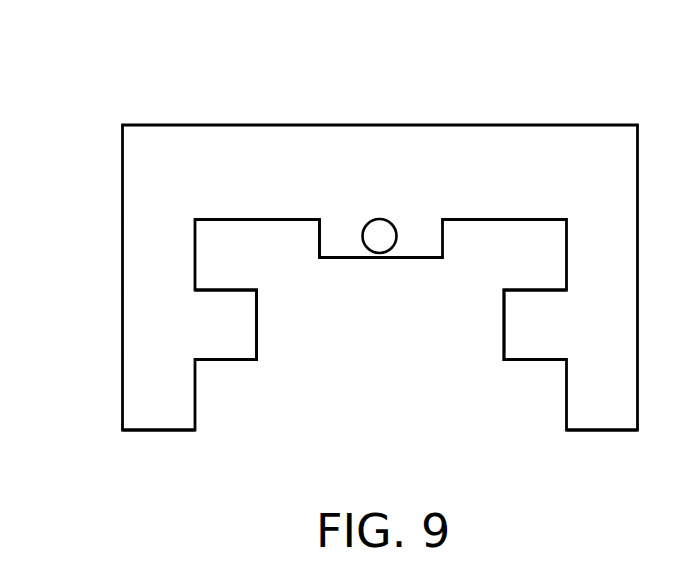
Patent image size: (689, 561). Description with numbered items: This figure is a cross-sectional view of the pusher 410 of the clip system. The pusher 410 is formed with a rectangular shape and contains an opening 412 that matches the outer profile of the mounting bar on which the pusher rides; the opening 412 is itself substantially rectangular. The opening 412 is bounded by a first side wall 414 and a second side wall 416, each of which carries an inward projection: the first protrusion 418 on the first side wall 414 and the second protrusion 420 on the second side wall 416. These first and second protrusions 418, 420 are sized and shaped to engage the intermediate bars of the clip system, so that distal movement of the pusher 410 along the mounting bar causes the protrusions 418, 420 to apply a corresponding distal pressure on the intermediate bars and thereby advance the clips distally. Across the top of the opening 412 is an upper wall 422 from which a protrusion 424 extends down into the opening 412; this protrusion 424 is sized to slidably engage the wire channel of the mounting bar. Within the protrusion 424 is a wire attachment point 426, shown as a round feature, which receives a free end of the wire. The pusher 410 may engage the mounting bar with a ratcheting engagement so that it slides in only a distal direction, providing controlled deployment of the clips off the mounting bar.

The pusher 410 is at (98, 80).
The opening 412 is at (300, 387).
The first side wall 414 is at (195, 264).
The second side wall 416 is at (566, 264).
The first protrusion 418 is at (228, 333).
The second protrusion 420 is at (539, 327).
The upper wall 422 is at (310, 220).
The protrusion 424 is at (338, 245).
The wire attachment point 426 is at (380, 239).